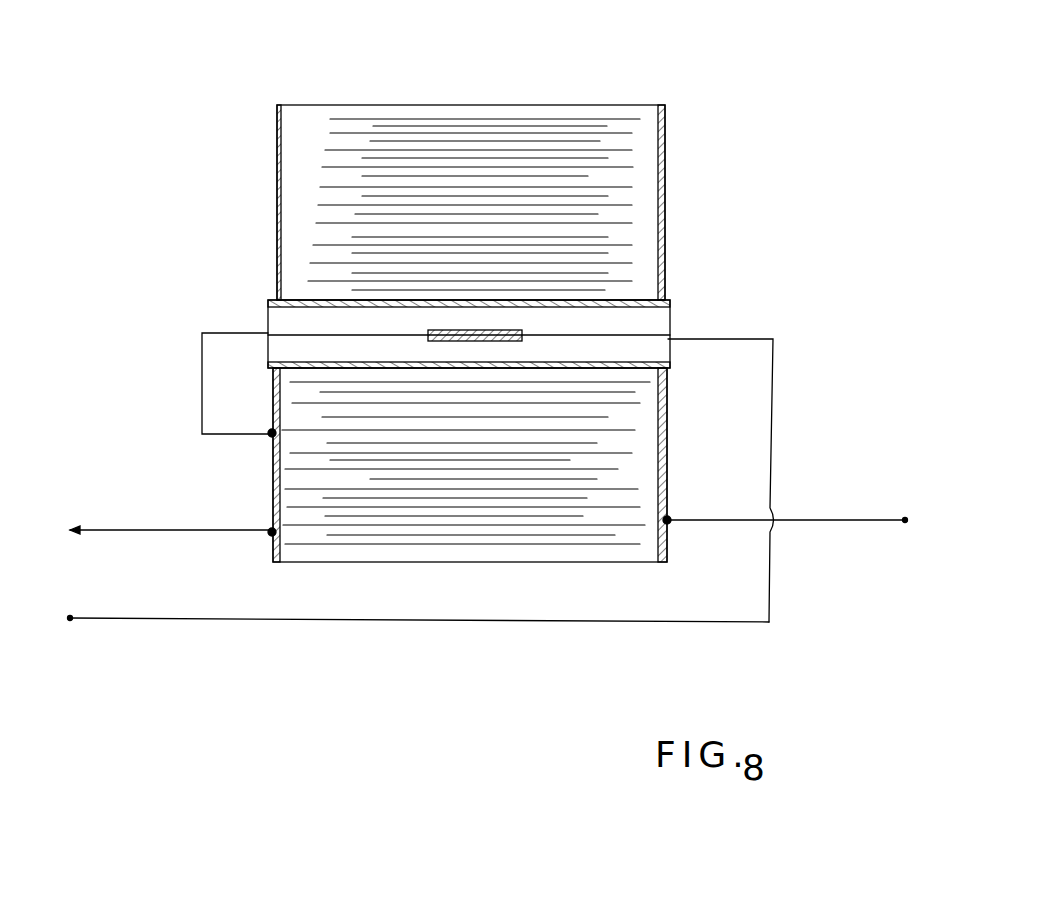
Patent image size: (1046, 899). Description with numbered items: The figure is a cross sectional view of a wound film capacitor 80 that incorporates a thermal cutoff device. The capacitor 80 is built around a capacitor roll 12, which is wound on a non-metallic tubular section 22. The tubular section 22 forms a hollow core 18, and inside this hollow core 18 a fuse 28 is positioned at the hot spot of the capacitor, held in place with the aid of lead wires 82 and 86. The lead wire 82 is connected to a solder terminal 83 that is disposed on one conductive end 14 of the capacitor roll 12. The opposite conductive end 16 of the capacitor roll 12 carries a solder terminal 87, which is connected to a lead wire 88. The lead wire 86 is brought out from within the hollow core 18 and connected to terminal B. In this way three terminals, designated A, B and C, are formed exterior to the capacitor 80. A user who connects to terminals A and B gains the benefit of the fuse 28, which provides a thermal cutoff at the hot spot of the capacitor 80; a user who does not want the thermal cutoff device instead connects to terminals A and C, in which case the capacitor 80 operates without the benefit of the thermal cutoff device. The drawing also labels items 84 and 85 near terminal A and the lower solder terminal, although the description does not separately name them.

The capacitor 80 is at (315, 42).
The capacitor roll 12 is at (353, 130).
The conductive end 14 is at (277, 152).
The conductive end 16 is at (668, 140).
The hollow core 18 is at (648, 322).
The non-metallic tubular section 22 is at (268, 300).
The fuse 28 is at (430, 330).
The lead wire 82 is at (202, 375).
The solder terminal 83 is at (270, 438).
The lead A 84 is at (135, 530).
The second terminal 85 is at (270, 540).
The lead wire 86 is at (230, 622).
The solder terminal 87 is at (670, 515).
The lead wire 88 is at (836, 520).